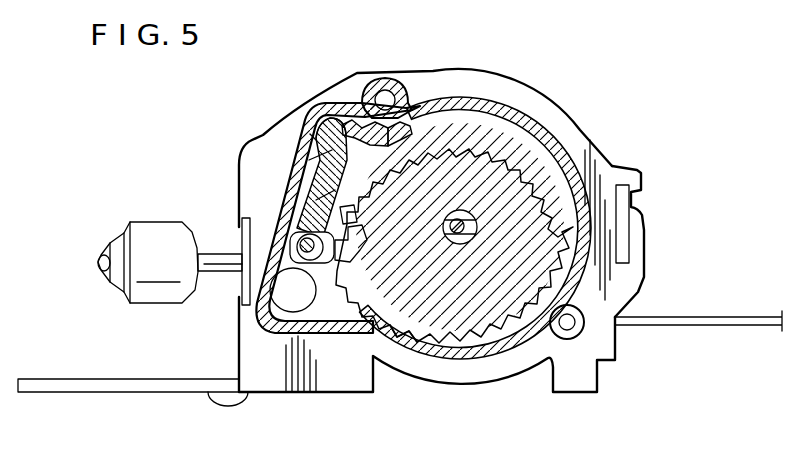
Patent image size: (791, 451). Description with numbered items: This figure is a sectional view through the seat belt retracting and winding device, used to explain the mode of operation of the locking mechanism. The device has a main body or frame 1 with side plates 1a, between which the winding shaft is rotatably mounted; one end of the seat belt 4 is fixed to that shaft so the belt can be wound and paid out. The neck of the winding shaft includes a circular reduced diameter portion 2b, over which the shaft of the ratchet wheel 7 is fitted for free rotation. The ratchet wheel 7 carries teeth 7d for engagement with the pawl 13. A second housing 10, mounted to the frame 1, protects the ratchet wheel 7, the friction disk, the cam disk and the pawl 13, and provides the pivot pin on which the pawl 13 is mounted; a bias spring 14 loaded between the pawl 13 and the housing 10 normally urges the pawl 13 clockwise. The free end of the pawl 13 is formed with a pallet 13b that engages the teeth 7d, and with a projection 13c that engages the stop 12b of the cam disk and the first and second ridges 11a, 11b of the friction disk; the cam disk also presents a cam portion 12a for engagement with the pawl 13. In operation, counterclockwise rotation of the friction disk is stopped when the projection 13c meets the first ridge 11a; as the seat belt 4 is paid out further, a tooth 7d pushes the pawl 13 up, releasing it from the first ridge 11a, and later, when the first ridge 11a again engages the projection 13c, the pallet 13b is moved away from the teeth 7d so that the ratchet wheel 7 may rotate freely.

The frame 1 is at (126, 392).
The side plates 1a is at (611, 164).
The reduced diameter portion 2b is at (470, 216).
The seat belt 4 is at (704, 318).
The ratchet wheel 7 is at (499, 322).
The teeth 7d is at (428, 338).
The second housing 10 is at (480, 100).
The first ridge 11a is at (362, 116).
The second ridge 11b is at (293, 226).
The cam portion 12a is at (410, 126).
The stop 12b is at (372, 120).
The pawl 13 is at (330, 173).
The pallet 13b is at (312, 137).
The projection 13c is at (323, 117).
The bias spring 14 is at (342, 212).